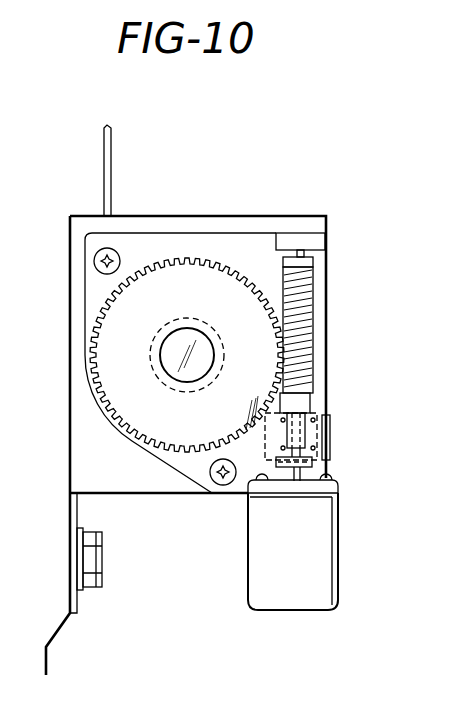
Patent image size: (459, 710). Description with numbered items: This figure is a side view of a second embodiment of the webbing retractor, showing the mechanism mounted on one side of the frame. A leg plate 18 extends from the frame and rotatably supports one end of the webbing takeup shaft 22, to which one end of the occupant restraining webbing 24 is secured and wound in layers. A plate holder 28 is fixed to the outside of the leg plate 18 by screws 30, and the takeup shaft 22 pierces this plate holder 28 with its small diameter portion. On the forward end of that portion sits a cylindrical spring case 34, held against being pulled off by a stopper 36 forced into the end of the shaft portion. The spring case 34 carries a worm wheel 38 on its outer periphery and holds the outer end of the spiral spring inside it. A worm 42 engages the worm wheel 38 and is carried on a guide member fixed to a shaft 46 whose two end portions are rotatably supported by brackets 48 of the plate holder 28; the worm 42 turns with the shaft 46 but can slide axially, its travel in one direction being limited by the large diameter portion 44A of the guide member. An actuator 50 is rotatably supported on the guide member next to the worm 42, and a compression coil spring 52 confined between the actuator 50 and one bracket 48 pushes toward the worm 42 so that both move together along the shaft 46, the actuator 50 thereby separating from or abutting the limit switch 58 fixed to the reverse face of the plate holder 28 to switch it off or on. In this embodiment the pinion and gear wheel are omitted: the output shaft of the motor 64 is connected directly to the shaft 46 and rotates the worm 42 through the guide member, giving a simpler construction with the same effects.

The leg plate 18 is at (223, 229).
The webbing takeup shaft 22 is at (152, 346).
The occupant restraining webbing 24 is at (104, 189).
The plate holder 28 is at (263, 248).
The screw 30 is at (222, 489).
The spring case 34 is at (113, 313).
The stopper 36 is at (172, 364).
The worm wheel 38 is at (200, 450).
The worm 42 is at (325, 349).
The large diameter portion 44A is at (313, 262).
The shaft 46 is at (296, 472).
The bracket 48 is at (308, 242).
The actuator 50 is at (318, 403).
The compression coil spring 52 is at (313, 448).
The limit switch 58 is at (330, 452).
The motor 64 is at (257, 558).